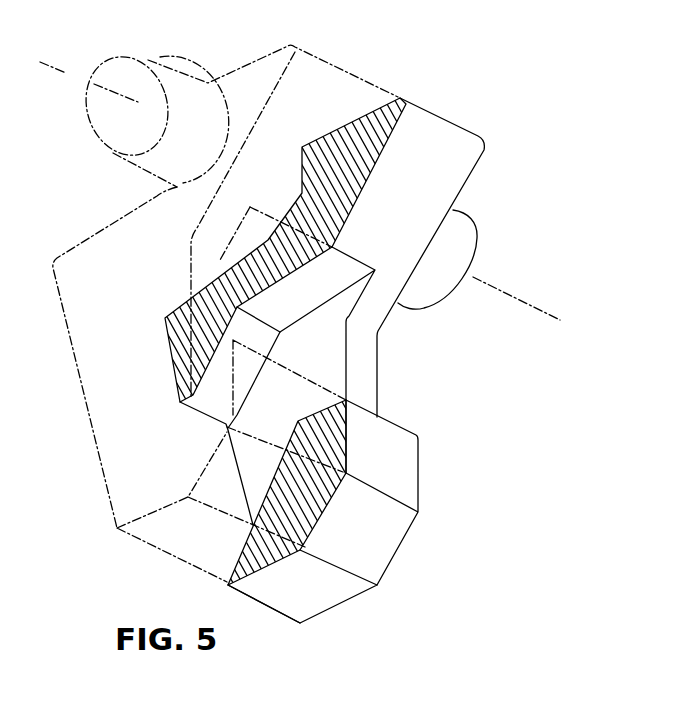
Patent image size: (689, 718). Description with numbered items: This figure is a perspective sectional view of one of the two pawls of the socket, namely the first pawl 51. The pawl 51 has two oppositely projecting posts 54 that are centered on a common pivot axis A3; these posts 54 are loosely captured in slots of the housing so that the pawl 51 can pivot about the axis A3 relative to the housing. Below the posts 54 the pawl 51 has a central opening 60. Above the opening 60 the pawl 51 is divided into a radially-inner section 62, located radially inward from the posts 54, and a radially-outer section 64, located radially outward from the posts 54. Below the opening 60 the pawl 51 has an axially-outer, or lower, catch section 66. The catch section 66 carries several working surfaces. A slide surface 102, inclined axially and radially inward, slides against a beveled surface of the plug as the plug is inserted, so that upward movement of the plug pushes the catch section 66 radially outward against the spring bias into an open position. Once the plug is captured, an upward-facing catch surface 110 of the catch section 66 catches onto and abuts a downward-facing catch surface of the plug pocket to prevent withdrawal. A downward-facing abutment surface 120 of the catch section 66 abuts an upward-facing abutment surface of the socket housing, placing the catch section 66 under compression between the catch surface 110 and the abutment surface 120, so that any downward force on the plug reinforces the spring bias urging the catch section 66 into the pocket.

The pawl 51 is at (291, 366).
The posts 54 is at (112, 73).
The central opening 60 is at (338, 365).
The radially-inner section 62 is at (445, 118).
The radially-outer section 64 is at (173, 357).
The catch section 66 is at (330, 585).
The slide surface 102 is at (375, 533).
The catch surface 110 is at (328, 407).
The abutment surface 120 is at (318, 593).
The pivot axis A3 is at (523, 298).